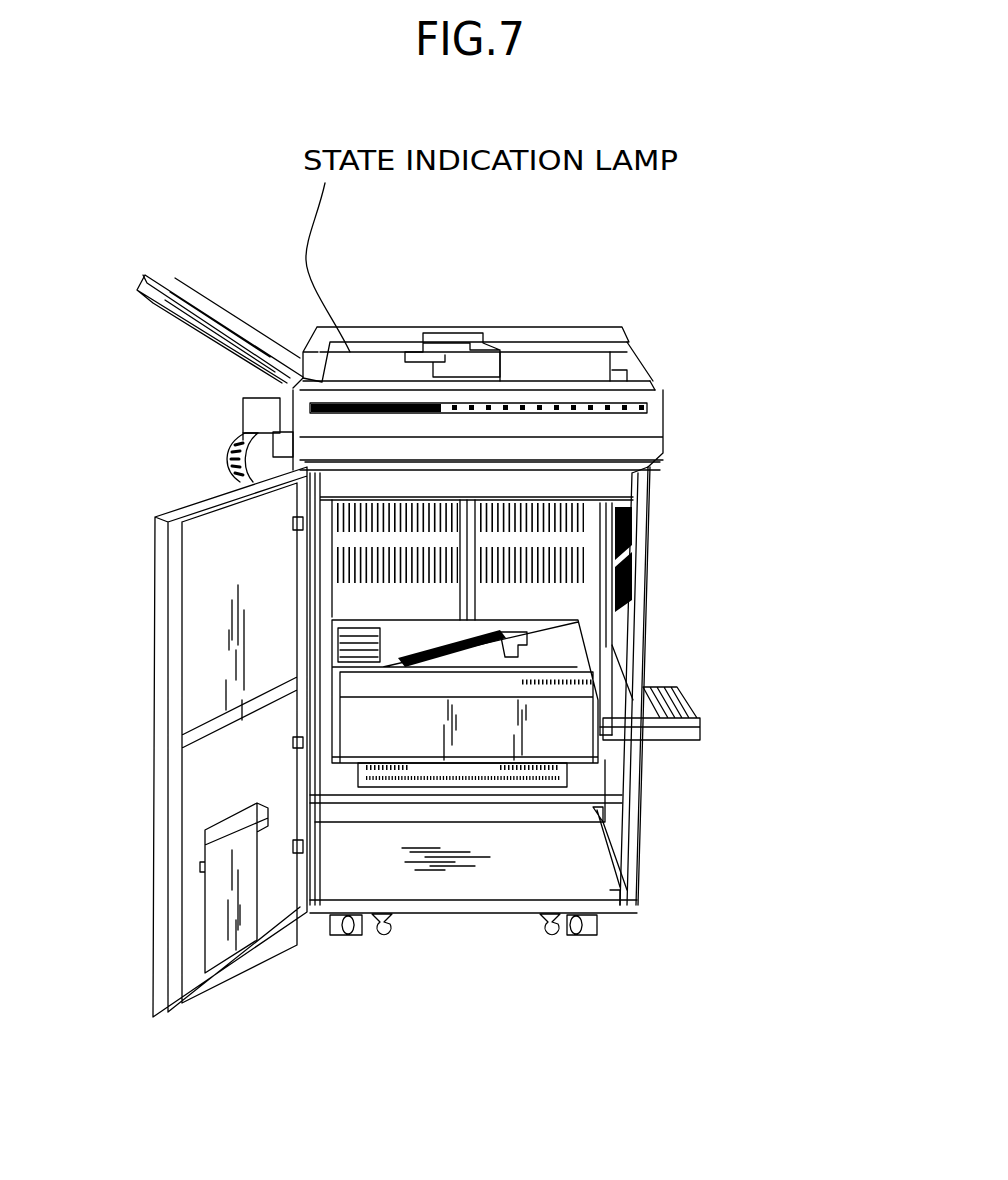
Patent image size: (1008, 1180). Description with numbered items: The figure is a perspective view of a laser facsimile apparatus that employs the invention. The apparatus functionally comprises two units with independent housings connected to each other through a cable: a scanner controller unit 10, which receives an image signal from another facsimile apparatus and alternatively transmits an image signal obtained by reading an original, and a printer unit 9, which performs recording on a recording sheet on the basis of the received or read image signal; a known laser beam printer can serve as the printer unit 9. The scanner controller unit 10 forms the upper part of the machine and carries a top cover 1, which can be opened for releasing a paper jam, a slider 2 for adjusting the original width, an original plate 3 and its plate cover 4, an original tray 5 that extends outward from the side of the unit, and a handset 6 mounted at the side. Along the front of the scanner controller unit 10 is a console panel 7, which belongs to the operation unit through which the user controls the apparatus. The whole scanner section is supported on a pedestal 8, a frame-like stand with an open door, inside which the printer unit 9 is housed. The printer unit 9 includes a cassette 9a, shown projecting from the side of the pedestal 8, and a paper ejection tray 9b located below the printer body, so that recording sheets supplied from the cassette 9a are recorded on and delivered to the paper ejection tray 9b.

The top cover 1 is at (433, 337).
The slider 2 is at (472, 345).
The original plate 3 is at (578, 371).
The plate cover 4 is at (655, 376).
The original tray 5 is at (180, 322).
The handset 6 is at (258, 422).
The console panel 7 is at (660, 415).
The pedestal 8 is at (613, 603).
The printer unit 9 is at (598, 821).
The cassette 9a is at (692, 717).
The paper ejection tray 9b is at (317, 790).
The scanner controller unit 10 is at (372, 350).